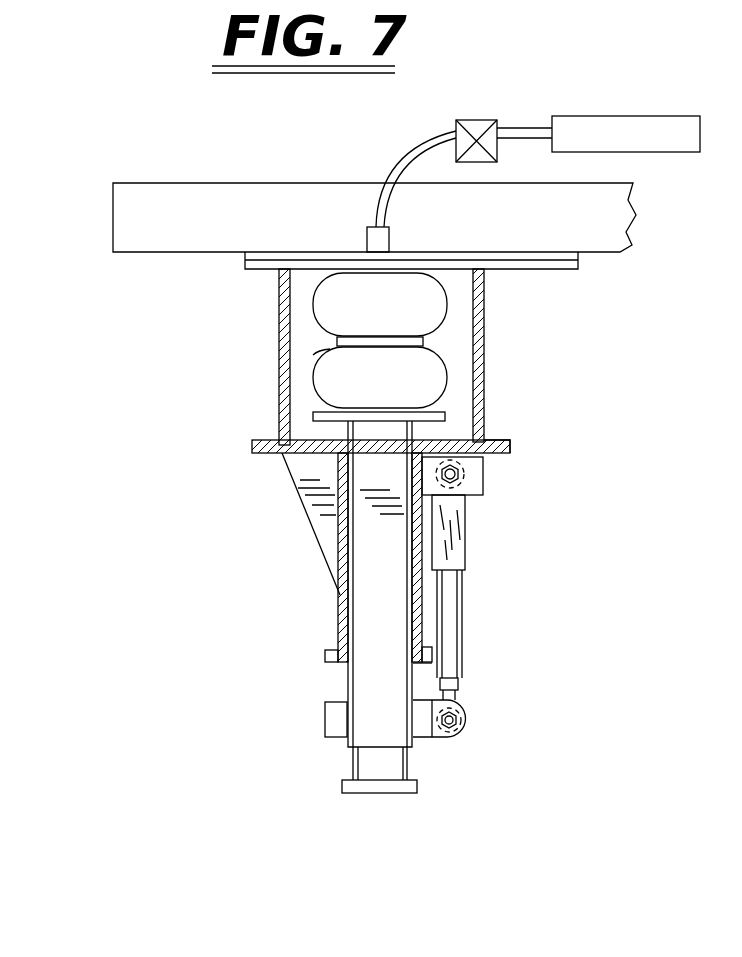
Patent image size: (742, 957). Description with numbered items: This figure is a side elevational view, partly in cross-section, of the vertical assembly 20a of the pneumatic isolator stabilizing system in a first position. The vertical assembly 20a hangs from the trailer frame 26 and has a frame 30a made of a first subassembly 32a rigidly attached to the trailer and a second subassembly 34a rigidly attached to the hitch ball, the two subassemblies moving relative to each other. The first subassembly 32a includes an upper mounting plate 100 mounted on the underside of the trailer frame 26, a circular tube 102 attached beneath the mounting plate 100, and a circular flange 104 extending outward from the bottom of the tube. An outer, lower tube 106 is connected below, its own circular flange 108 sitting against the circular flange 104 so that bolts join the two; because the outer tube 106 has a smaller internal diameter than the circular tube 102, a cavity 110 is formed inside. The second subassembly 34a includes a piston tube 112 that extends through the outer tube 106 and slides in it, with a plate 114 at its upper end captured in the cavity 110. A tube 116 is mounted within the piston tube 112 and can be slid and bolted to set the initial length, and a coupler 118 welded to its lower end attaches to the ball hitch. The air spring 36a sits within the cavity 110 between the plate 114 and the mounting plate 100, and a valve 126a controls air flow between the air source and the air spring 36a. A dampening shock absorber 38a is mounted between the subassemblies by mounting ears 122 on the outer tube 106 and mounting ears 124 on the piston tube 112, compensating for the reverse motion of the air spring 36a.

The vertical assembly 20a is at (232, 523).
The trailer frame 26 is at (162, 253).
The frame 30a is at (308, 545).
The first subassembly 32a is at (277, 346).
The second subassembly 34a is at (340, 681).
The air spring 36a is at (425, 376).
The dampening shock absorber 38a is at (457, 612).
The upper mounting plate 100 is at (250, 262).
The circular tube 102 is at (485, 293).
The circular flange 104 is at (492, 440).
The outer lower tube 106 is at (343, 612).
The circular flange 108 is at (495, 455).
The cavity 110 is at (305, 376).
The piston tube 112 is at (393, 673).
The plate 114 is at (375, 423).
The tube 116 is at (400, 767).
The coupler 118 is at (391, 792).
The mounting ears 122 is at (478, 485).
The mounting ears 124 is at (462, 731).
The valve 126a is at (476, 120).